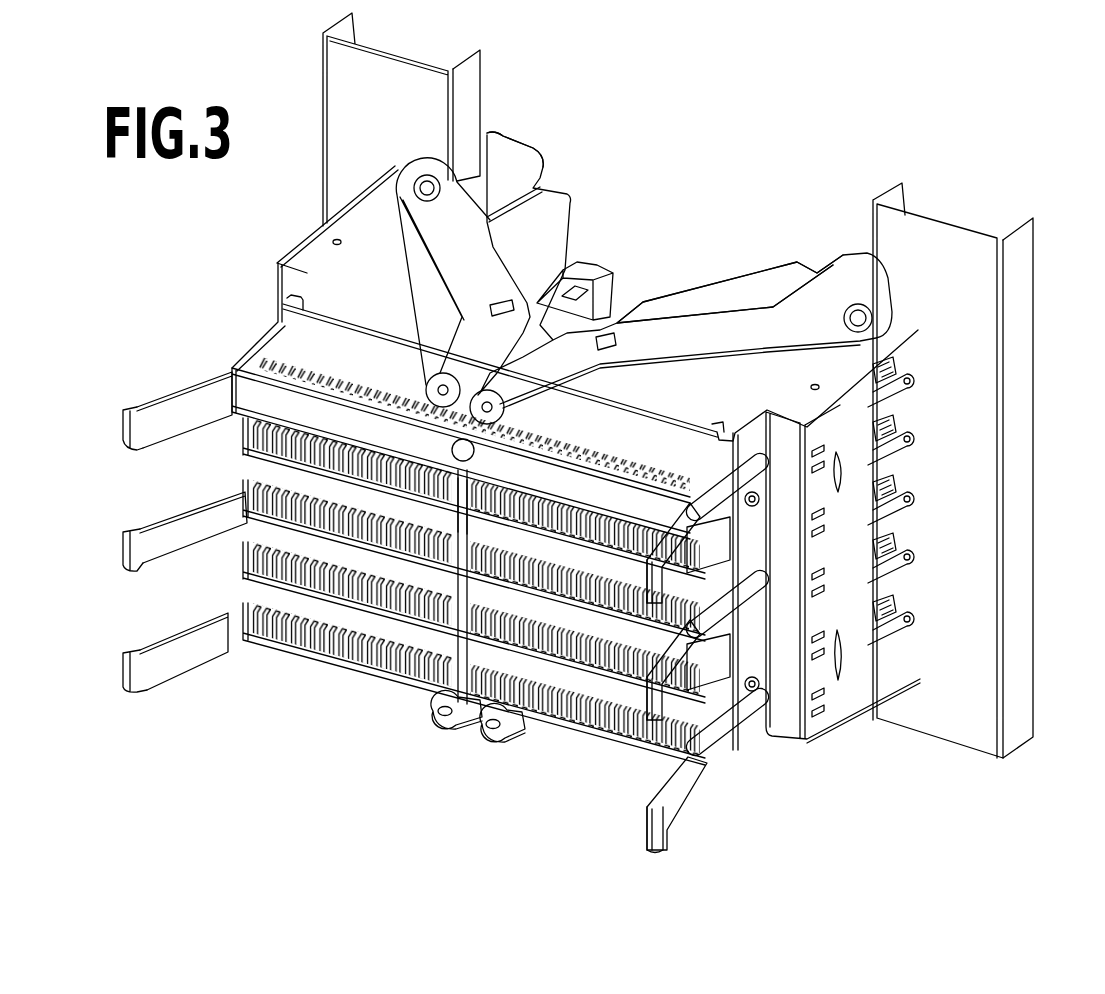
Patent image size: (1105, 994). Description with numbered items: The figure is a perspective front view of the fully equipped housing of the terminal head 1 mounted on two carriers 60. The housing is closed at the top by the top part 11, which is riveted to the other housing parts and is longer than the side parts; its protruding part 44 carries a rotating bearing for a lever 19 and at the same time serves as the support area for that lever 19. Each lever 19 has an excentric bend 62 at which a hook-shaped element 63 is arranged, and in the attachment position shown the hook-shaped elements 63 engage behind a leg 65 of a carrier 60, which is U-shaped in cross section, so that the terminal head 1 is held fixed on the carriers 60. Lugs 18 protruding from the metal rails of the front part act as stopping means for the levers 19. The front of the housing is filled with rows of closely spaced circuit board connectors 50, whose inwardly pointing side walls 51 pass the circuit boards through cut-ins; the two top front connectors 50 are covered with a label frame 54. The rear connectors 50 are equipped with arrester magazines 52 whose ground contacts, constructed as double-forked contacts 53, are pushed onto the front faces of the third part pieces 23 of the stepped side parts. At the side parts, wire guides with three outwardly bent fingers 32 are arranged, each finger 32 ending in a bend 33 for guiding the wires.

The terminal head 1 is at (350, 722).
The top part 11 is at (342, 267).
The lug 18 is at (290, 292).
The lever 19 is at (486, 268).
The third part piece 23 is at (840, 688).
The finger 32 is at (183, 652).
The bend 33 is at (122, 556).
The protruding part 44 is at (776, 270).
The circuit board connector 50 is at (357, 553).
The side wall 51 is at (441, 700).
The arrester magazine 52 is at (594, 272).
The double-forked contact 53 is at (897, 628).
The label frame 54 is at (253, 393).
The carrier 60 is at (343, 72).
The excentric bend 62 is at (500, 190).
The hook-shaped element 63 is at (482, 138).
The leg 65 is at (476, 72).